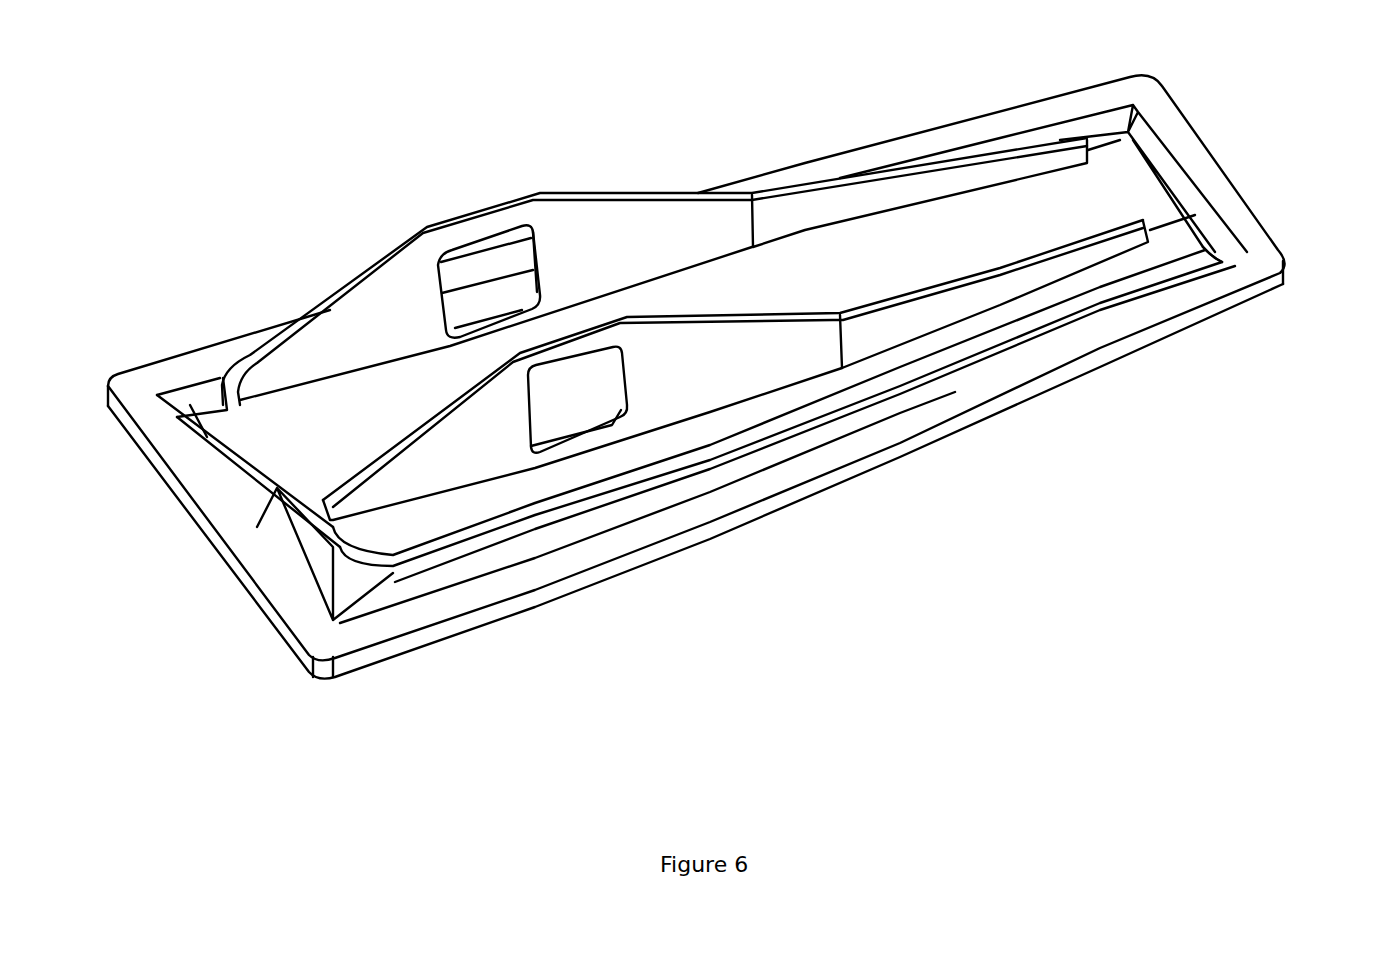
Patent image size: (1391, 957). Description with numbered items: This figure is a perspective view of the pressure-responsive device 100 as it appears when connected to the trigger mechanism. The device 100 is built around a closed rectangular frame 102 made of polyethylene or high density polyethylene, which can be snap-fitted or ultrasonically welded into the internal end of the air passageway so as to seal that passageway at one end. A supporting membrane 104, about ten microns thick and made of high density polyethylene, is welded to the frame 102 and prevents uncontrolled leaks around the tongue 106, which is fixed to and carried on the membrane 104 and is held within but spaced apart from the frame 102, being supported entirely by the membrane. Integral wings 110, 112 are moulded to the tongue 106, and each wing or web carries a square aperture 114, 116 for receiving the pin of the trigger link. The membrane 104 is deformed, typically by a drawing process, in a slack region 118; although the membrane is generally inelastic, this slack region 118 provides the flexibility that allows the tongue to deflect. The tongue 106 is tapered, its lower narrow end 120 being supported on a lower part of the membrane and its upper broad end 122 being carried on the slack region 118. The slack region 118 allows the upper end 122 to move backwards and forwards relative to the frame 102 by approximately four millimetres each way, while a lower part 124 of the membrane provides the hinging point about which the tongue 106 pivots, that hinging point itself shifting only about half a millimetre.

The pressure-responsive device 100 is at (190, 628).
The closed rectangular frame 102 is at (1084, 338).
The supporting membrane 104 is at (688, 495).
The tongue 106 is at (1113, 150).
The integral wing 110 is at (650, 232).
The integral wing 112 is at (782, 350).
The square aperture 114 is at (573, 413).
The square aperture 116 is at (478, 243).
The slack region 118 is at (207, 437).
The lower narrow end 120 is at (1175, 215).
The upper broad end 122 is at (313, 485).
The lower part of the membrane 124 is at (1218, 258).